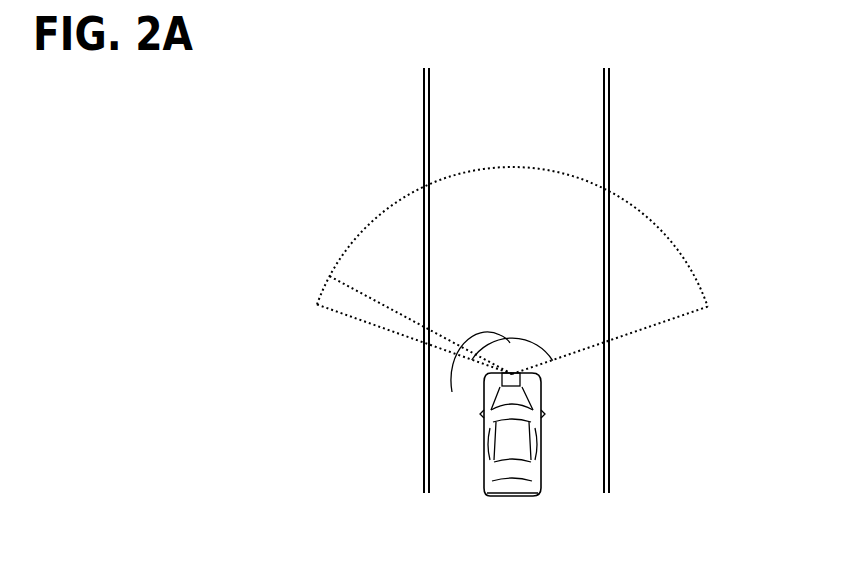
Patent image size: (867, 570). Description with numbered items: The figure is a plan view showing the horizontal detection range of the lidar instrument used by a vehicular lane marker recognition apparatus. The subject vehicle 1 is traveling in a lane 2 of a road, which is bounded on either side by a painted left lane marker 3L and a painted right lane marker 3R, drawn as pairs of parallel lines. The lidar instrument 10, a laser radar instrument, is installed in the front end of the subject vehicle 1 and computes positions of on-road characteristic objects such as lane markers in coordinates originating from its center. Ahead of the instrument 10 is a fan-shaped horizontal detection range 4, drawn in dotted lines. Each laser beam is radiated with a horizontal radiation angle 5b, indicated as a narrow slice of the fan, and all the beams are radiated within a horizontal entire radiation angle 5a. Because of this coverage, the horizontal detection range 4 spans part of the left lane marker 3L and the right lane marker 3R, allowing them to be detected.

The subject vehicle 1 is at (537, 472).
The lane 2 is at (520, 280).
The left lane marker 3L is at (424, 137).
The right lane marker 3R is at (609, 137).
The horizontal detection range 4 is at (645, 282).
The horizontal entire radiation angle 5a is at (452, 384).
The horizontal radiation angle 5b is at (380, 335).
The lidar instrument 10 is at (515, 386).